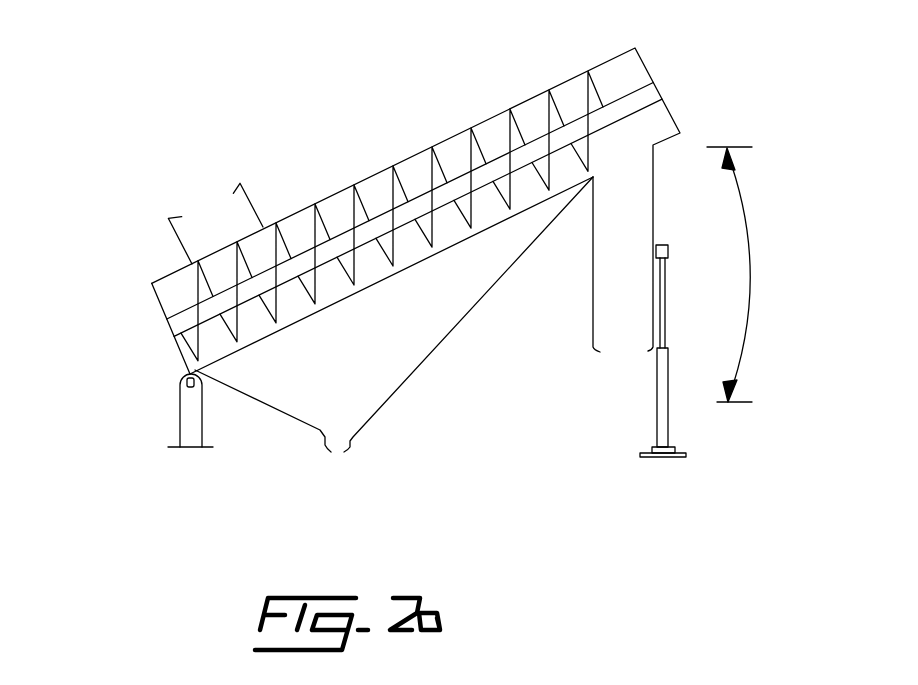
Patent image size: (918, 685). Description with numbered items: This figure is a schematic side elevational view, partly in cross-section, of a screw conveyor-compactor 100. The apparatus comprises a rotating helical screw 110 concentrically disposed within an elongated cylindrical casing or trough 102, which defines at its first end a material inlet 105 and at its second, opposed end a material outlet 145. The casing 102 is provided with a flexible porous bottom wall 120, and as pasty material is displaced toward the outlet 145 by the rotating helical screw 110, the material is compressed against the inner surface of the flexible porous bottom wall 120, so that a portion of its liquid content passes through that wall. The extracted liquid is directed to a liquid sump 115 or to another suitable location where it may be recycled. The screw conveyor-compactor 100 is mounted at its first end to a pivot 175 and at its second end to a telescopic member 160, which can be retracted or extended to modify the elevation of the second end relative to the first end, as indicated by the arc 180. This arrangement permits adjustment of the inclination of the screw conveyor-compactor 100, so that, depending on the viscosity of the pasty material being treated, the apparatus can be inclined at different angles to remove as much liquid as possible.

The screw conveyor-compactor 100 is at (548, 87).
The casing or trough 102 is at (408, 155).
The material inlet 105 is at (211, 216).
The helical screw 110 is at (397, 196).
The liquid sump 115 is at (347, 390).
The flexible porous bottom wall 120 is at (402, 270).
The material outlet 145 is at (622, 282).
The telescopic member 160 is at (658, 420).
The pivot 175 is at (180, 380).
The arc 180 is at (748, 267).